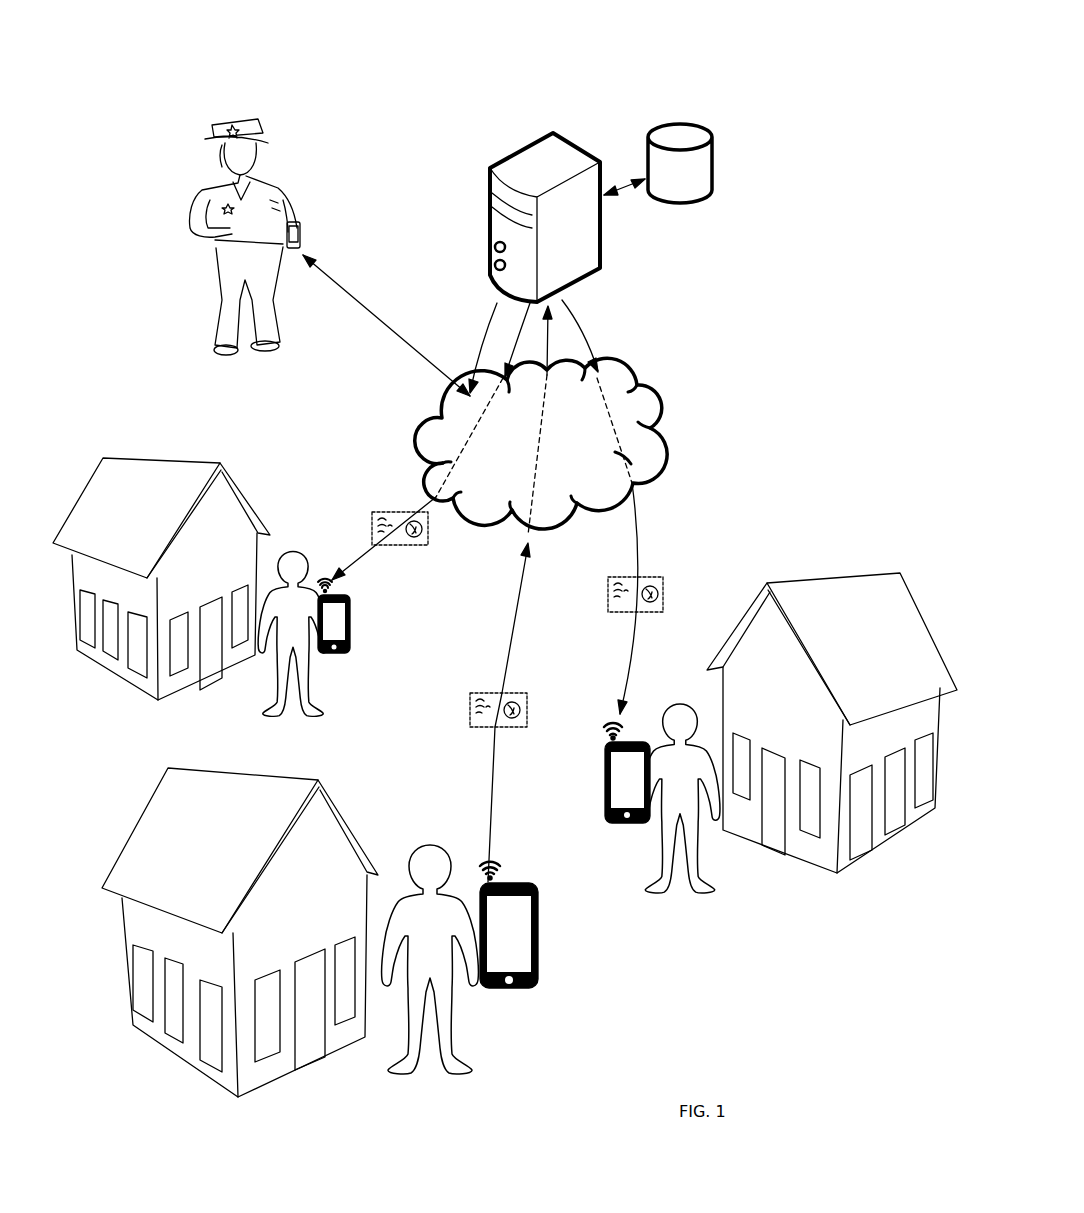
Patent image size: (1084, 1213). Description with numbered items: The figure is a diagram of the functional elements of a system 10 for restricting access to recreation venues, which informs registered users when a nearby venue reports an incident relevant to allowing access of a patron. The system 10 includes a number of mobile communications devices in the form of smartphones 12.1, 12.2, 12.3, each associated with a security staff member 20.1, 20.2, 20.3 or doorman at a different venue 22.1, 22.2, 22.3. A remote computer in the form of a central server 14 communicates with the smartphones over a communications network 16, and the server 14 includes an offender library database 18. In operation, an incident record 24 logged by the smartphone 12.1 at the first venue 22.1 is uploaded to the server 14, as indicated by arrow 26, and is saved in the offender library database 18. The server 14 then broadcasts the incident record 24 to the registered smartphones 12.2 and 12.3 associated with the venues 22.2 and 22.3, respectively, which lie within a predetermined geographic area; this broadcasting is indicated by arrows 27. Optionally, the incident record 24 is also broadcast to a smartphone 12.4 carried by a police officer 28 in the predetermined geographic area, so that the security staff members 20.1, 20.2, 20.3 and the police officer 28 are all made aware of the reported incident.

The system for restricting access to recreation venues 10 is at (400, 66).
The smartphone 12.1 is at (523, 933).
The smartphone 12.2 is at (612, 770).
The smartphone 12.3 is at (340, 617).
The smartphone 12.4 is at (282, 249).
The central server 14 is at (526, 161).
The communications network 16 is at (522, 449).
The offender library database 18 is at (708, 170).
The security staff member 20.1 is at (458, 1035).
The security staff member 20.2 is at (705, 868).
The security staff member 20.3 is at (313, 682).
The first venue 22.1 is at (152, 832).
The venue 22.2 is at (848, 595).
The venue 22.3 is at (115, 468).
The incident record 24 is at (376, 512).
The arrow 26 is at (511, 640).
The arrows 27 is at (360, 560).
The police officer 28 is at (210, 198).